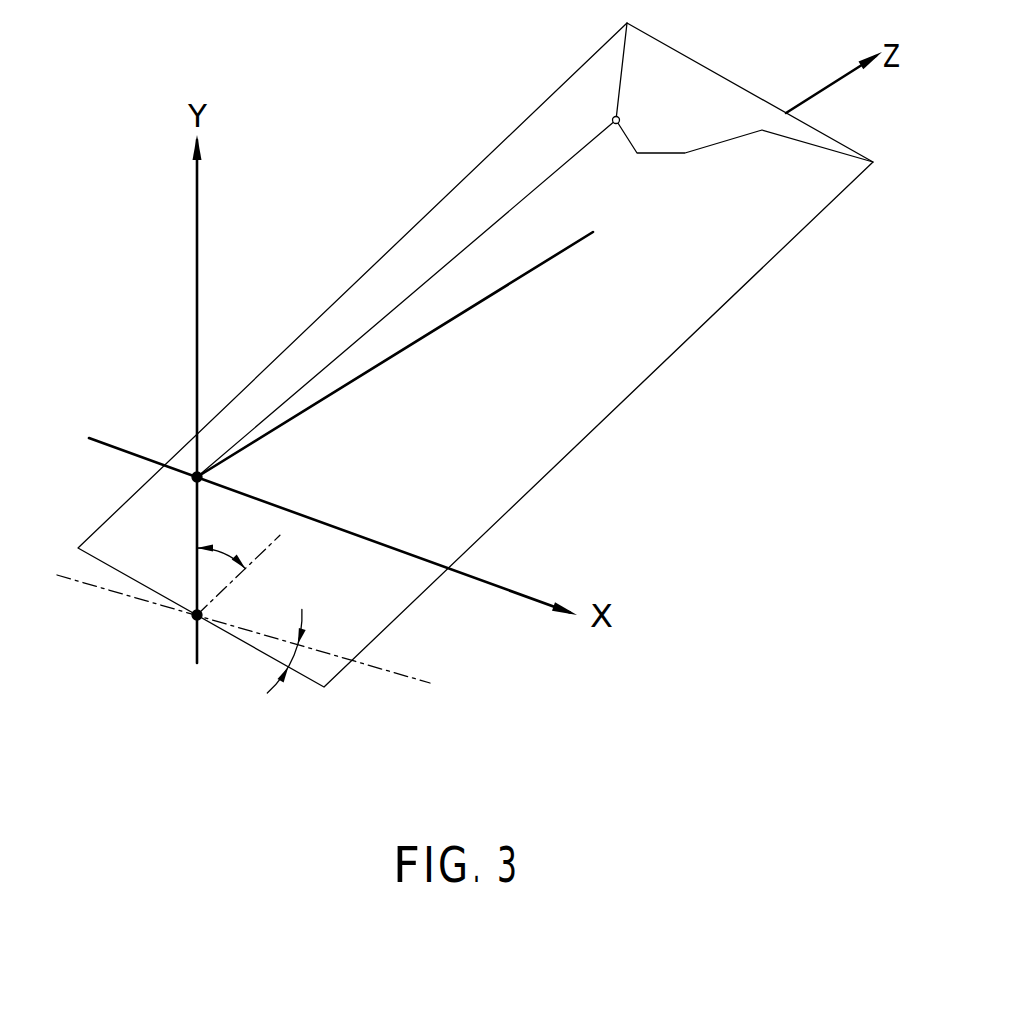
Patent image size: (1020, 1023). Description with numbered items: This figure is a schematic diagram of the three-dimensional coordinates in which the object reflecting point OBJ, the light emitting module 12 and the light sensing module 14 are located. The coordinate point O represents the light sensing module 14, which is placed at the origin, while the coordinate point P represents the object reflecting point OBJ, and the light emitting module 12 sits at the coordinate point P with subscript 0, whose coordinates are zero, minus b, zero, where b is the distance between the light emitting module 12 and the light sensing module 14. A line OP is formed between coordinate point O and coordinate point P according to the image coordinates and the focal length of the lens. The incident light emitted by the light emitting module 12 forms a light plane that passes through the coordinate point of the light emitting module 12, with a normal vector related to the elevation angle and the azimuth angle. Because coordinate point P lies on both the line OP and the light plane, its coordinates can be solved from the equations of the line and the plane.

The light sensing module 14 is at (192, 479).
The light emitting module 12 is at (137, 633).
The subscript index of point P0 0 is at (192, 618).